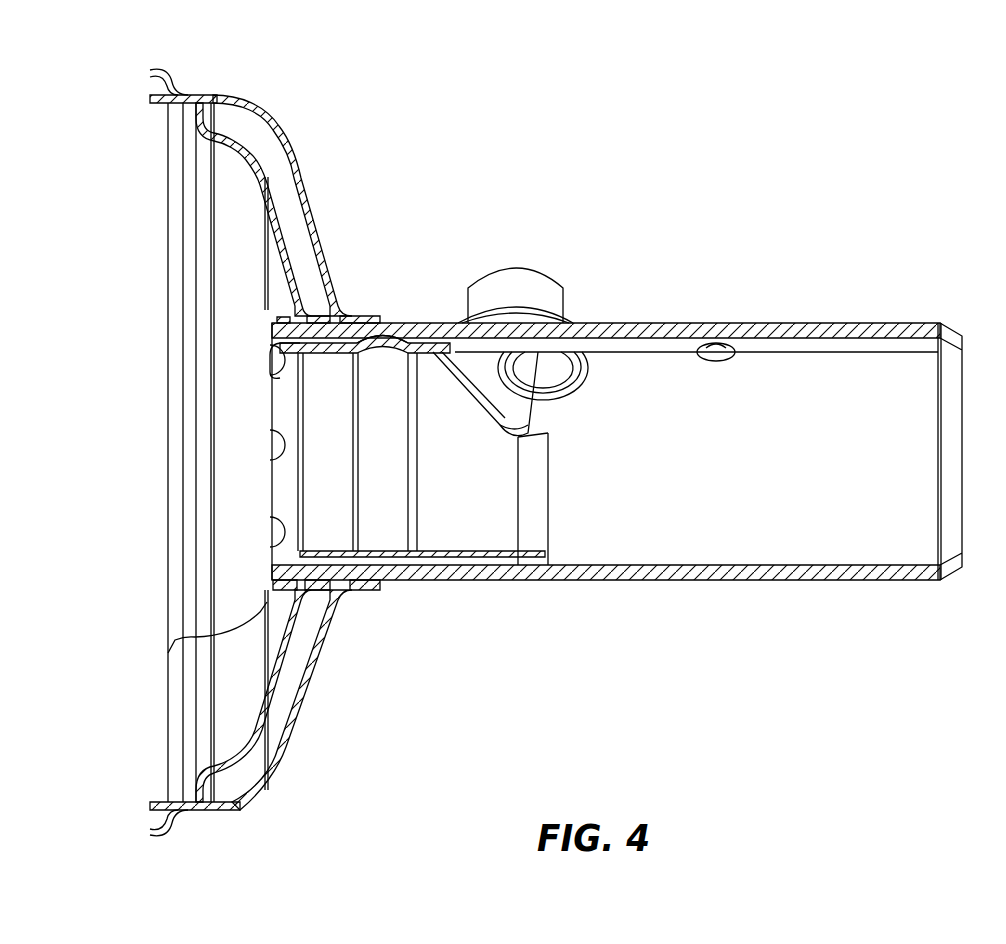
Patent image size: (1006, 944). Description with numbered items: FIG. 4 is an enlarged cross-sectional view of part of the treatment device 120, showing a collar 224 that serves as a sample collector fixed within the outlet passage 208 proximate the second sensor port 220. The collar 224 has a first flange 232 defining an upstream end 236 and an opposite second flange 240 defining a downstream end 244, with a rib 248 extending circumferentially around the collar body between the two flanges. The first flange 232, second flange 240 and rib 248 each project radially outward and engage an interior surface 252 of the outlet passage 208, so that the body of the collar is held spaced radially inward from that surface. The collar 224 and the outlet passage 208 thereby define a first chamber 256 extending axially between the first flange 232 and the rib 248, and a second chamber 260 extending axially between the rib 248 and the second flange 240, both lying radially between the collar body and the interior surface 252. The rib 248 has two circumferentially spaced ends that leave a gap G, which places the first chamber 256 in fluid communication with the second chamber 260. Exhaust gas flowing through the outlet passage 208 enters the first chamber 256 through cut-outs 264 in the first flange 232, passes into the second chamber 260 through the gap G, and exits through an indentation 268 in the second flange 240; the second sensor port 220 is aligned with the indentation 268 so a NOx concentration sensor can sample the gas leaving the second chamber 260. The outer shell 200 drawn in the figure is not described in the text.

The treatment device 120 is at (350, 719).
The outer housing shell 200 is at (284, 128).
The outlet passage 208 is at (891, 325).
The second sensor port 220 is at (521, 270).
The collar 224 is at (426, 342).
The first flange 232 is at (277, 408).
The upstream end 236 is at (270, 497).
The second flange 240 is at (537, 476).
The downstream end 244 is at (549, 452).
The rib 248 is at (381, 338).
The interior surface 252 is at (781, 340).
The first chamber 256 is at (325, 340).
The second chamber 260 is at (448, 337).
The cut-outs 264 is at (272, 358).
The indentation 268 is at (515, 423).
The gap G is at (385, 558).